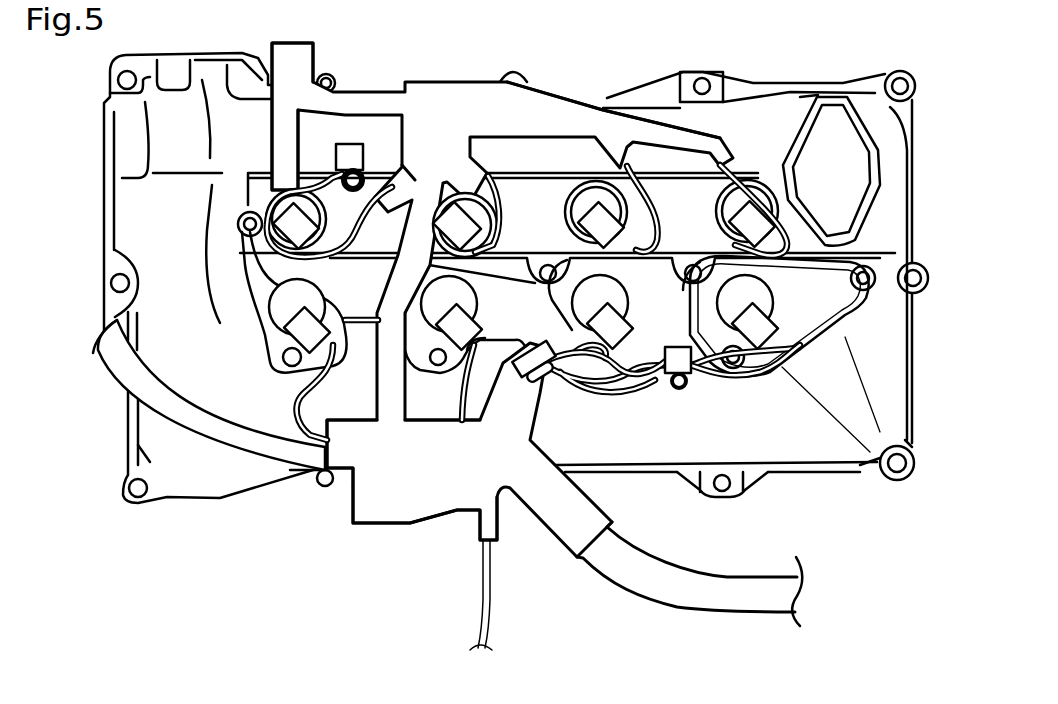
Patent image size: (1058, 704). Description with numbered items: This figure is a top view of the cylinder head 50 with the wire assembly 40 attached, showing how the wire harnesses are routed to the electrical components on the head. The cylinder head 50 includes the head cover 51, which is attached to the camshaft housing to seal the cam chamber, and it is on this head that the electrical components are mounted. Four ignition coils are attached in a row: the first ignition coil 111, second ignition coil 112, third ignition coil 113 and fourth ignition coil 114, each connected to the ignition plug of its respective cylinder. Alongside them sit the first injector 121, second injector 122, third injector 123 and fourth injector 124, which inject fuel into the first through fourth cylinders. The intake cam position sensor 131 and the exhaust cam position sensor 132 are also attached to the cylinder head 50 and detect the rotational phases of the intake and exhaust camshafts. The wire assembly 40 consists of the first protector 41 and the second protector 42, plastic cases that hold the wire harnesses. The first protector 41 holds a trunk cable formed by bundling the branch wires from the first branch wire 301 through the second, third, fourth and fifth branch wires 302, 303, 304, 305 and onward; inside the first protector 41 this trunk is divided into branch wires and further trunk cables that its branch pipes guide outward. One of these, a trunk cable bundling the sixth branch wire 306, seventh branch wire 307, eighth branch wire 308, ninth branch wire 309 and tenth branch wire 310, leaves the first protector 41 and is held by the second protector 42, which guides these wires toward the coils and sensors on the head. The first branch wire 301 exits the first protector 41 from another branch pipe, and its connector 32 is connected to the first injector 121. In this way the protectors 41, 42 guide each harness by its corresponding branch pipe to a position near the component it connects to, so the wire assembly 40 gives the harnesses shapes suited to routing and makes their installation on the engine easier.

The connector 32 is at (780, 320).
The wire assembly 40 is at (537, 314).
The first protector 41 is at (383, 517).
The second protector 42 is at (542, 100).
The cylinder head 50 is at (90, 114).
The head cover 51 is at (740, 84).
The first ignition coil 111 is at (267, 193).
The second ignition coil 112 is at (499, 236).
The third ignition coil 113 is at (565, 200).
The fourth ignition coil 114 is at (714, 228).
The first injector 121 is at (226, 361).
The second injector 122 is at (477, 291).
The third injector 123 is at (571, 318).
The fourth injector 124 is at (718, 298).
The intake cam position sensor 131 is at (687, 397).
The exhaust cam position sensor 132 is at (363, 165).
The first branch wire 301 is at (298, 412).
The second branch wire 302 is at (458, 403).
The third branch wire 303 is at (558, 365).
The fourth branch wire 304 is at (737, 383).
The fifth branch wire 305 is at (617, 393).
The sixth branch wire 306 is at (373, 200).
The seventh branch wire 307 is at (497, 180).
The eighth branch wire 308 is at (645, 177).
The ninth branch wire 309 is at (780, 213).
The tenth branch wire 310 is at (318, 165).